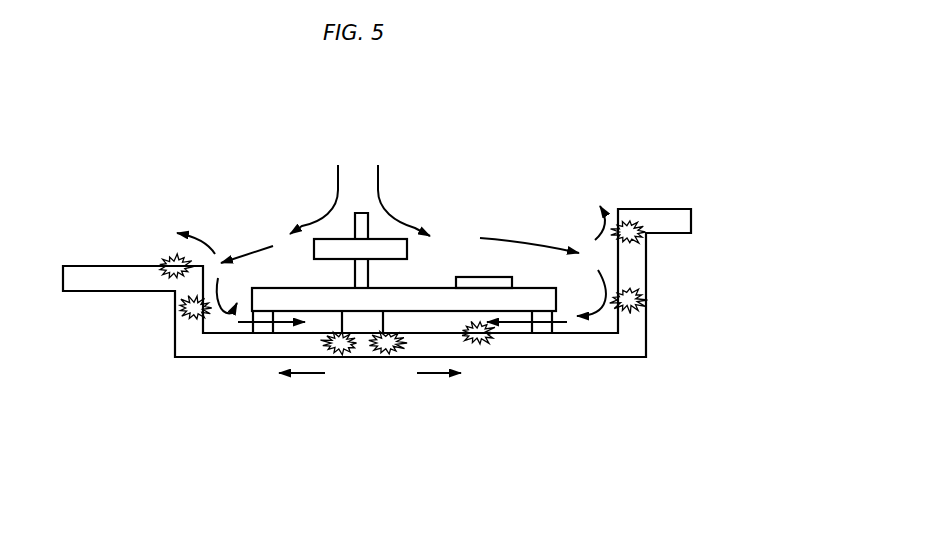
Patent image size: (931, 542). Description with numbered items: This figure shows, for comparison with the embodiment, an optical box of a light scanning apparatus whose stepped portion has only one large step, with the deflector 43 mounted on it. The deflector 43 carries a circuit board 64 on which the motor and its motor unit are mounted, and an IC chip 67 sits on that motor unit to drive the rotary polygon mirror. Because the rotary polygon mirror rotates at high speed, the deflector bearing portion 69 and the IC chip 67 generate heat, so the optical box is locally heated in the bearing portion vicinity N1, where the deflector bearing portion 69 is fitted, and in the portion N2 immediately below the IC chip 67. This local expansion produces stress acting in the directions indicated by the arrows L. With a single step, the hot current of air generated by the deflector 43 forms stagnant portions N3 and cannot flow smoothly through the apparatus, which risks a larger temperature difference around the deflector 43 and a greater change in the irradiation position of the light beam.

The deflector 43 is at (365, 175).
The circuit board 64 is at (423, 297).
The IC chip 67 is at (467, 277).
The deflector bearing portion 69 is at (362, 357).
The bearing portion vicinity N1 is at (345, 357).
The portion immediately below the IC chip N2 is at (493, 338).
The stagnant portions N3 is at (170, 282).
The arrows indicating stress directions L is at (298, 373).